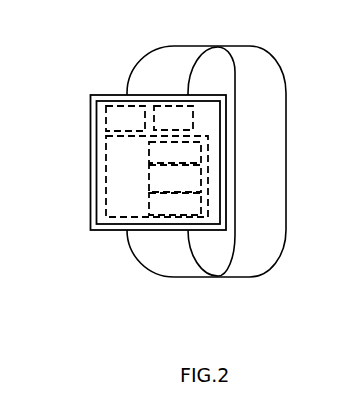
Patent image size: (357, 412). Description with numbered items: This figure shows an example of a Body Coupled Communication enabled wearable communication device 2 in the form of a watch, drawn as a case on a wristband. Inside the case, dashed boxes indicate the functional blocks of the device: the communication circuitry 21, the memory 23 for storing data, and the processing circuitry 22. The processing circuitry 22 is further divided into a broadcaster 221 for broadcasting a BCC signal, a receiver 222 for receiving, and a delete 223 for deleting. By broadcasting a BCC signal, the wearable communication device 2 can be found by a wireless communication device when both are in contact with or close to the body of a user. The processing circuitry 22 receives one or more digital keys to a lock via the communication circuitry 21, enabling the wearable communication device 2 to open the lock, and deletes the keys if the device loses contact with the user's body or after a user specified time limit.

The wearable communication device 2 is at (89, 48).
The communication circuitry 21 is at (125, 118).
The memory 23 is at (173, 118).
The processing circuitry 22 is at (157, 176).
The broadcaster 221 is at (175, 152).
The receiver 222 is at (175, 178).
The delete 223 is at (175, 204).